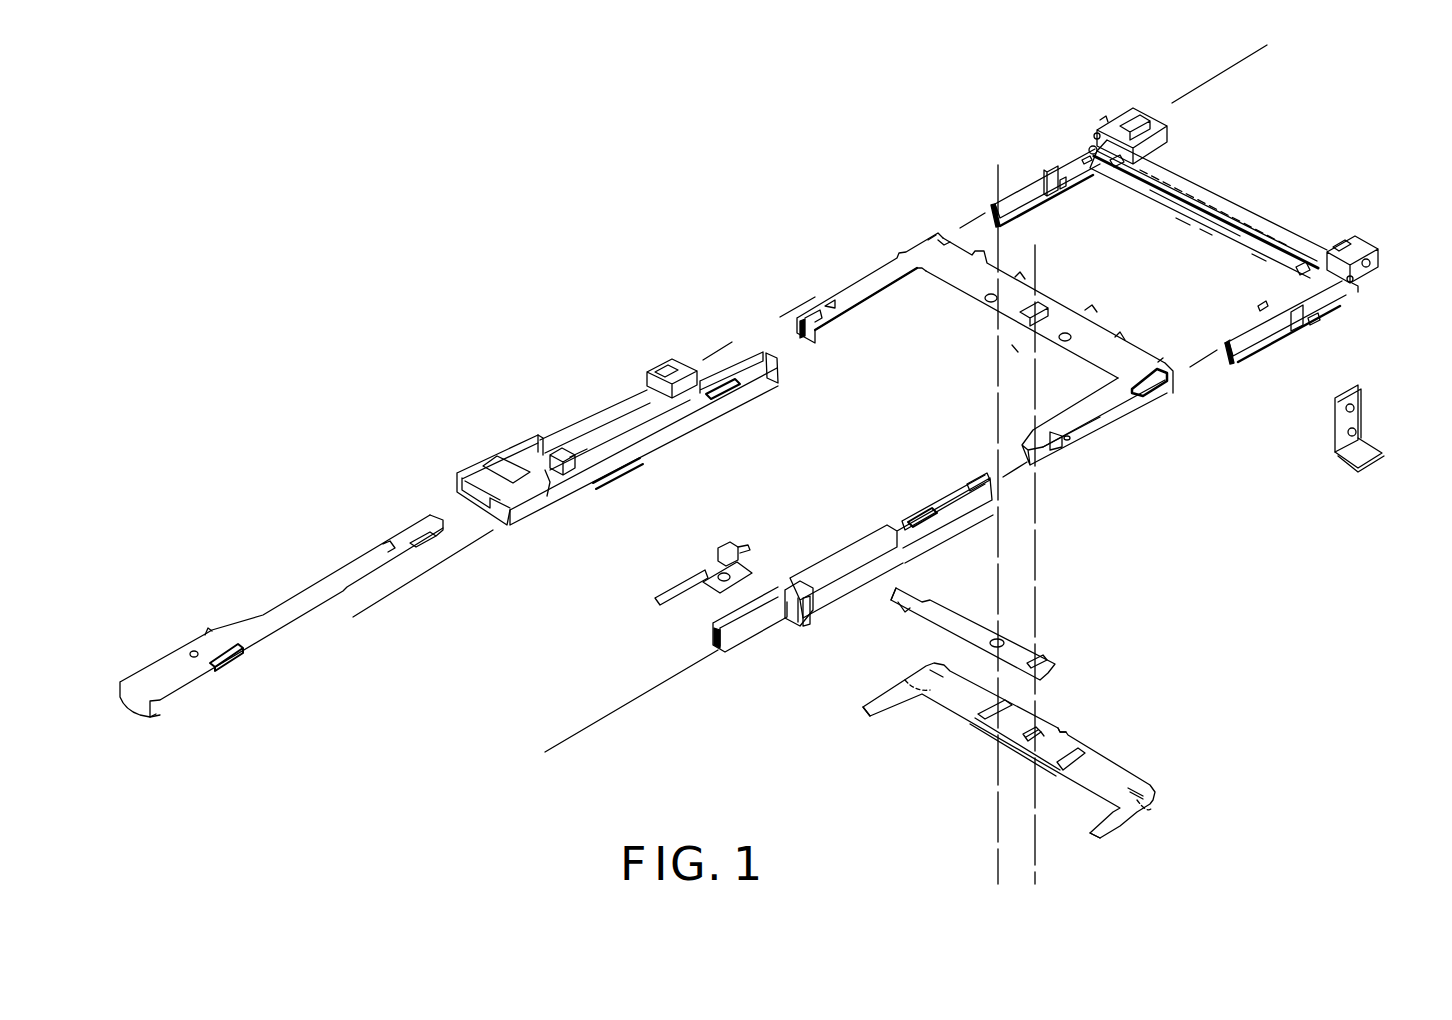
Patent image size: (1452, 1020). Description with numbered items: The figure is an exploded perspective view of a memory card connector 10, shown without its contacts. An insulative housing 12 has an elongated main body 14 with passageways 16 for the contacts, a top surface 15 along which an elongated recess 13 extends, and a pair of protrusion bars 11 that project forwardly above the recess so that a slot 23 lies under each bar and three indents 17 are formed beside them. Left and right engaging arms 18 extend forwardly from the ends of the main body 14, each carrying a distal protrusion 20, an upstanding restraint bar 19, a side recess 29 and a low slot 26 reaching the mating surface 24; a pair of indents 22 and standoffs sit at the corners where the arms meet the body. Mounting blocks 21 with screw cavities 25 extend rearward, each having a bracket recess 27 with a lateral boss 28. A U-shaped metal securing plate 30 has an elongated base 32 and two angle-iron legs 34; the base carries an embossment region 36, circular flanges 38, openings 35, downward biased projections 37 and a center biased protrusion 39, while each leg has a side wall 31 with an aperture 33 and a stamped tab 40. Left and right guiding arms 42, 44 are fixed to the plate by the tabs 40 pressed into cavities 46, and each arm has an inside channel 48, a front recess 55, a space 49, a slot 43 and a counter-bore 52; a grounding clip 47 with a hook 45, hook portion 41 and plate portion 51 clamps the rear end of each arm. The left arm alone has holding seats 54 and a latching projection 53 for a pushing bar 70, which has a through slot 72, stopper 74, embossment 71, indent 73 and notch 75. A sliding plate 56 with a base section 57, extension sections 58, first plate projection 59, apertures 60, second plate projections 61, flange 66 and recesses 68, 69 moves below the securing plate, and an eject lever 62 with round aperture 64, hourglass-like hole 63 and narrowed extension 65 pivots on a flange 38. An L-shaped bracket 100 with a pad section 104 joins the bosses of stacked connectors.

The memory card connector 10 is at (1355, 407).
The protrusion bar 11 is at (1145, 196).
The insulative housing 12 is at (1211, 210).
The elongated recess 13 is at (1195, 210).
The main body 14 is at (1206, 218).
The top surface 15 is at (1195, 186).
The passageways 16 is at (1115, 178).
The indents 17 is at (1225, 198).
The engaging arm 18 is at (1040, 186).
The restraint bar 19 is at (1053, 194).
The protrusion 20 is at (1240, 355).
The mounting block 21 is at (1136, 116).
The indents 22 is at (1091, 152).
The slot 23 is at (1205, 232).
The mating surface 24 is at (1260, 258).
The screw cavity 25 is at (1168, 140).
The low slot 26 is at (1063, 188).
The bracket recess 27 is at (1104, 115).
The boss 28 is at (1372, 275).
The side recess 29 is at (1312, 326).
The securing plate 30 is at (1007, 337).
The side wall 31 is at (1102, 420).
The base 32 is at (990, 266).
The aperture 33 is at (1072, 440).
The legs 34 is at (885, 270).
The opening 35 is at (928, 244).
The embossment region 36 is at (1050, 306).
The biased projections 37 is at (1020, 278).
The circular flange 38 is at (986, 300).
The center biased protrusion 39 is at (1092, 308).
The tab 40 is at (820, 333).
The hook portion 41 is at (725, 560).
The left insulative guiding arm 42 is at (619, 420).
The slot 43 is at (558, 450).
The right insulative guiding arm 44 is at (850, 551).
The hook 45 is at (742, 548).
The cavities 46 is at (706, 397).
The grounding clip 47 is at (698, 578).
The inside channel 48 is at (603, 465).
The space 49 is at (710, 370).
The plate portion 51 is at (745, 568).
The counter-bore 52 is at (547, 497).
The latching projection 53 is at (538, 432).
The holding seats 54 is at (500, 462).
The recess 55 is at (765, 345).
The sliding plate 56 is at (1048, 753).
The base section 57 is at (1066, 738).
The extension sections 58 is at (886, 702).
The first plate projection 59 is at (1044, 722).
The longitudinal apertures 60 is at (972, 716).
The second plate projections 61 is at (920, 682).
The eject lever 62 is at (993, 619).
The hourglass-like hole 63 is at (1046, 652).
The round aperture 64 is at (1008, 640).
The narrowed extension 65 is at (903, 596).
The elongated flange 66 is at (1010, 746).
The first recess 68 is at (1062, 730).
The second recesses 69 is at (928, 668).
The pushing bar 70 is at (282, 628).
The embossment 71 is at (193, 650).
The through slot 72 is at (433, 547).
The indent 73 is at (236, 662).
The stopper 74 is at (160, 708).
The notch 75 is at (207, 632).
The L-shaped bracket 100 is at (969, 375).
The pad section 104 is at (1357, 470).